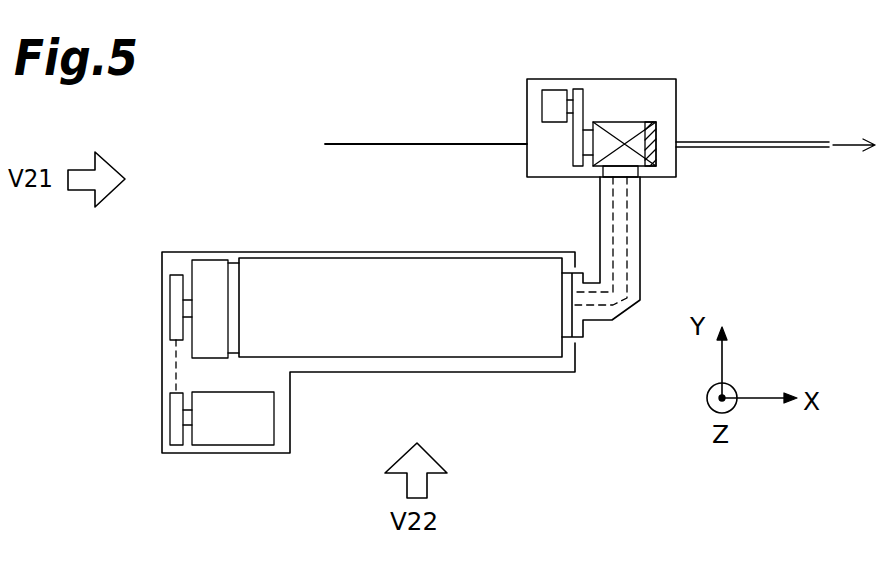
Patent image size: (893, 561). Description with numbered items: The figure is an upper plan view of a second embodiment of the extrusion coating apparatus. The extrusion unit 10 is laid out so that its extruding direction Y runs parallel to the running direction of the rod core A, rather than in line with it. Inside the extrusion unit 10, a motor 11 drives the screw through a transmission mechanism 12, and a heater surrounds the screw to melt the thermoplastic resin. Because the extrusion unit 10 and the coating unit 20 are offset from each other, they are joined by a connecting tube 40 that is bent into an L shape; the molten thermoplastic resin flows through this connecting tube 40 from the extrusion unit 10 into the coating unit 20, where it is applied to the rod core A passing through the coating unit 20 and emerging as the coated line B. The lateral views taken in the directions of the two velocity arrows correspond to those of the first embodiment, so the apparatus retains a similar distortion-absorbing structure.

The extrusion unit 10 is at (393, 251).
The motor 11 is at (237, 440).
The transmission mechanism 12 is at (176, 380).
The coating unit 20 is at (640, 79).
The connecting tube 40 is at (643, 266).
The rod core A is at (390, 144).
The downstream conveyor line B is at (786, 142).